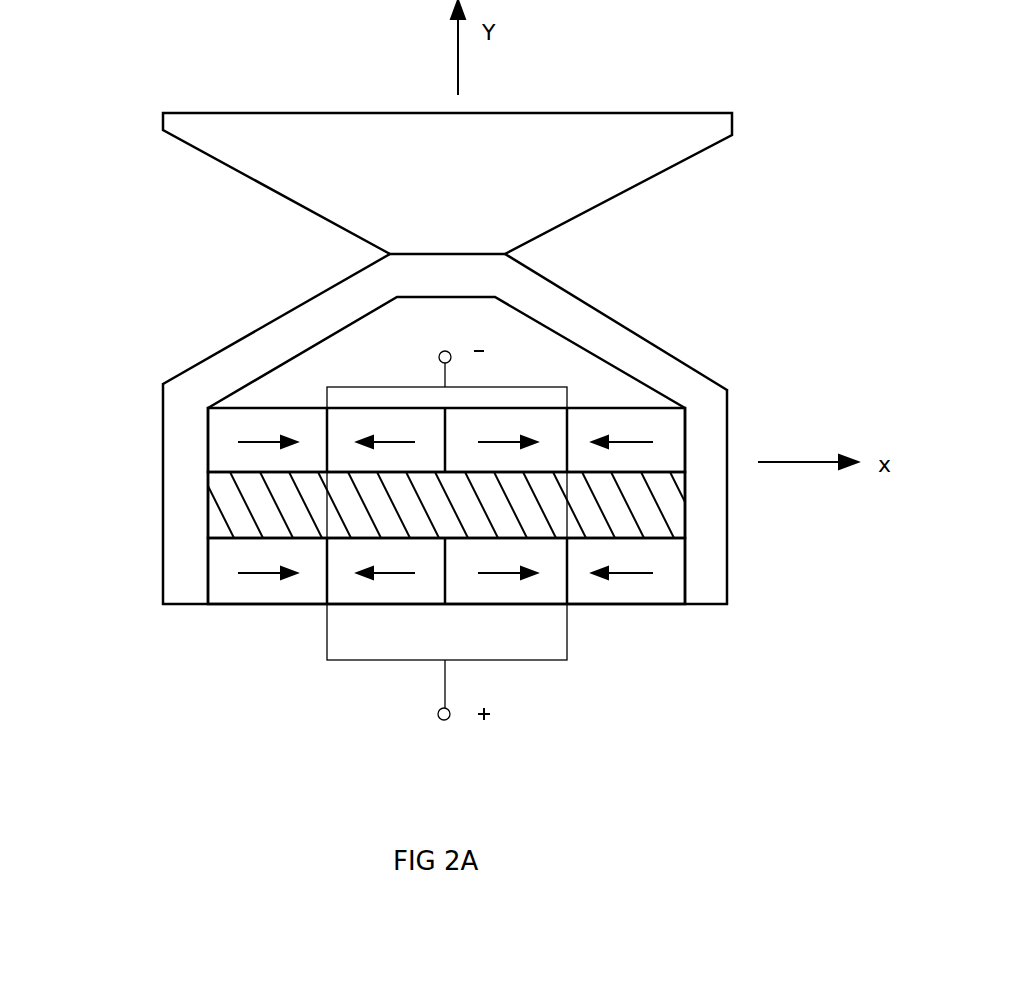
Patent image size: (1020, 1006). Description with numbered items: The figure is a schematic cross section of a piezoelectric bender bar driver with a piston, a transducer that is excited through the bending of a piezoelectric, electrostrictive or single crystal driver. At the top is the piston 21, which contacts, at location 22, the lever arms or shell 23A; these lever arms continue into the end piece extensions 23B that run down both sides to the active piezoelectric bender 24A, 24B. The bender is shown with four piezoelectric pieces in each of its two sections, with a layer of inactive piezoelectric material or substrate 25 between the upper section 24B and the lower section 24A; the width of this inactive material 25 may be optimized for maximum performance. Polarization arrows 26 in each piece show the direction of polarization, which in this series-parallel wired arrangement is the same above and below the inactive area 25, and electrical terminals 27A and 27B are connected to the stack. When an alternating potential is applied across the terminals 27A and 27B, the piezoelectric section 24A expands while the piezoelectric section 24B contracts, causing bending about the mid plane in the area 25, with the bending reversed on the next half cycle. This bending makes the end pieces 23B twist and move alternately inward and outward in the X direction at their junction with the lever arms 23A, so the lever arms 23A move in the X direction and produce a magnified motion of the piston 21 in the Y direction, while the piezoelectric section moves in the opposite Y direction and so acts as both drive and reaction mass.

The piston 21 is at (447, 183).
The contact location 22 is at (442, 238).
The lever arms or shell 23A is at (618, 348).
The end piece extensions 23B is at (715, 528).
The active piezoelectric bender section 24A is at (243, 590).
The active piezoelectric bender section 24B is at (222, 425).
The inactive piezoelectric material or substrate 25 is at (230, 502).
The polarization arrows 26 is at (636, 576).
The electrical terminal 27A is at (447, 717).
The electrical terminal 27B is at (434, 366).